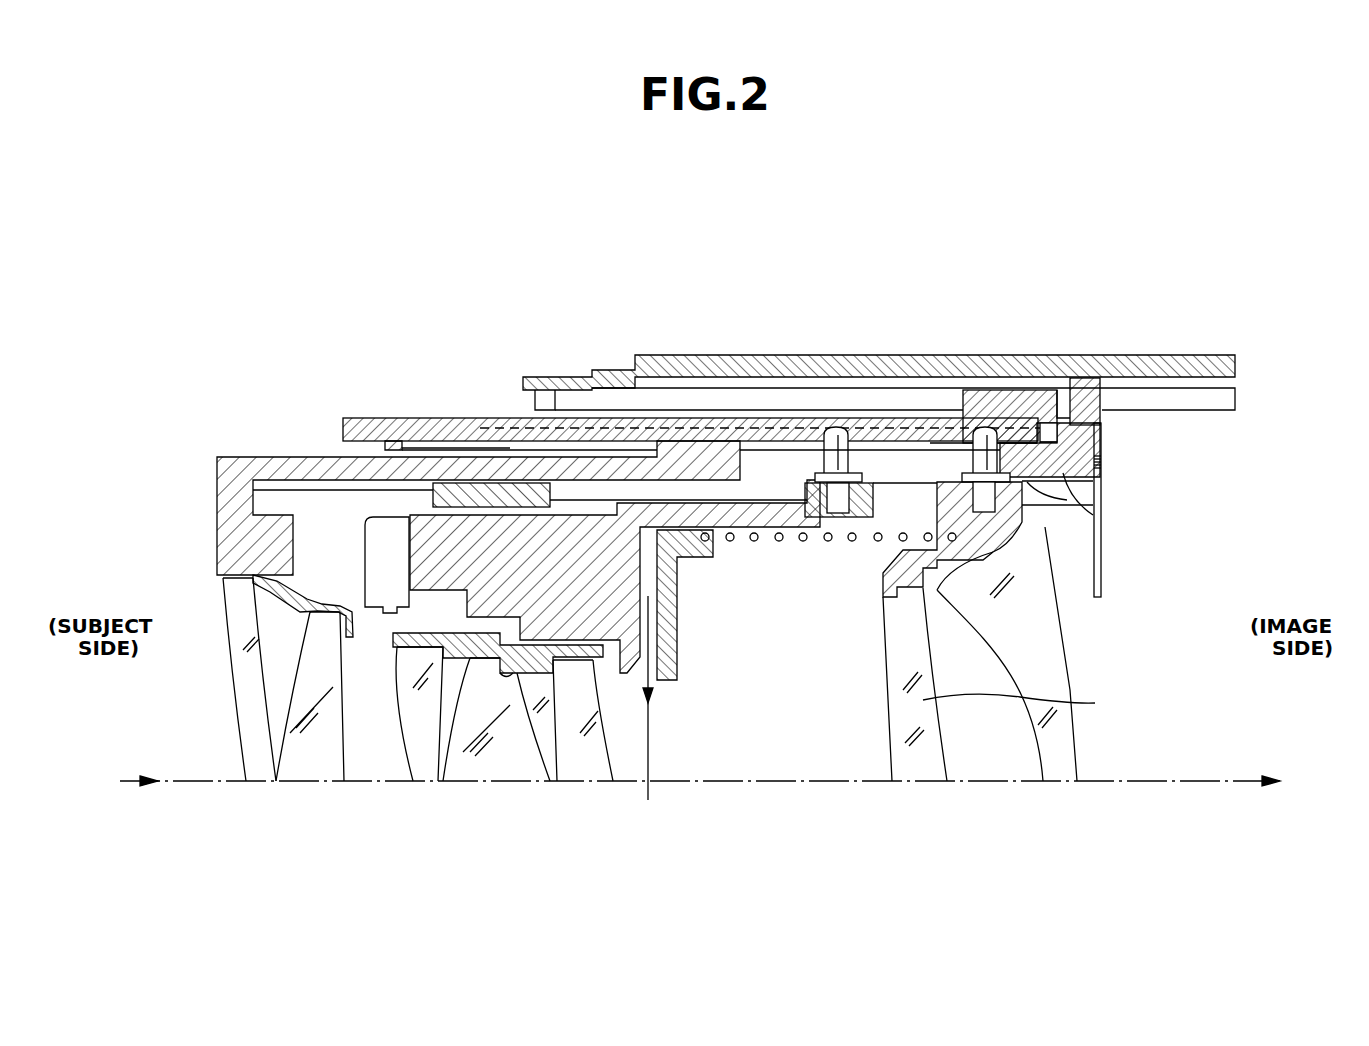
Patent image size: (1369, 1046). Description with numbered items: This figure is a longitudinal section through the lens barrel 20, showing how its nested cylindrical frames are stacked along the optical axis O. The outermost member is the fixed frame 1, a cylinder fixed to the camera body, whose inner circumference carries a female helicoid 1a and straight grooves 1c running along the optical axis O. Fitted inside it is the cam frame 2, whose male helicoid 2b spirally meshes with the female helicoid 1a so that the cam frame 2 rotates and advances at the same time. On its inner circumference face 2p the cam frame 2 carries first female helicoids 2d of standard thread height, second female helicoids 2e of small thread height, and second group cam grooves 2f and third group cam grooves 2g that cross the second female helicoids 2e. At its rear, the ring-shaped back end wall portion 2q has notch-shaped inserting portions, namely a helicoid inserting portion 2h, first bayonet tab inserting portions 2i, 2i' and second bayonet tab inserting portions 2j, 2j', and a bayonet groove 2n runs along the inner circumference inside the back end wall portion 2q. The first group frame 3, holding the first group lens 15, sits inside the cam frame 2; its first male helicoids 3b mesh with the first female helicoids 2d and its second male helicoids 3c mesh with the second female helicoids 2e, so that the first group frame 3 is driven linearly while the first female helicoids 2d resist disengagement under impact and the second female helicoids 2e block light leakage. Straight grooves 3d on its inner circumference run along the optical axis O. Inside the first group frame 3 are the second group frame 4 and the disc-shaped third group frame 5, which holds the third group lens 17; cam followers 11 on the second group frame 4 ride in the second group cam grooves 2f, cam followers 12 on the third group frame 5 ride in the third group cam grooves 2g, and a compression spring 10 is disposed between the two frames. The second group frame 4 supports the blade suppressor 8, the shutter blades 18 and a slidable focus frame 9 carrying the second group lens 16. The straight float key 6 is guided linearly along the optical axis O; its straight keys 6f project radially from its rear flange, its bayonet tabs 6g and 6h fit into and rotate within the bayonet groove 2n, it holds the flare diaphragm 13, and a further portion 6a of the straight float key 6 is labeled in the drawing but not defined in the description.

The optical axis O is at (180, 781).
The lens barrel 20 is at (243, 318).
The fixed frame 1 is at (1165, 362).
The female helicoid 1a is at (565, 375).
The straight grooves 1c is at (1210, 382).
The cam frame 2 is at (363, 418).
The male helicoid 2b is at (1030, 460).
The first female helicoids 2d is at (433, 495).
The second female helicoids 2e is at (479, 426).
The second group cam grooves 2f is at (862, 430).
The third group cam grooves 2g is at (963, 450).
The helicoid inserting portion 2h is at (1146, 466).
The bayonet tab inserting portion 2i is at (1117, 462).
The bayonet tab inserting portion 2j is at (1110, 464).
The bayonet tab inserting portion 2i' is at (1103, 465).
The bayonet tab inserting portion 2j' is at (1100, 467).
The bayonet groove 2n is at (1068, 325).
The inner circumference face 2p is at (1102, 540).
The back end wall portion 2q is at (1102, 432).
The first group frame 3 is at (232, 458).
The first male helicoids 3b is at (722, 422).
The second male helicoids 3c is at (760, 445).
The straight grooves 3d is at (290, 487).
The second group frame 4 is at (410, 549).
The third group frame 5 is at (993, 552).
The straight float key 6 is at (1094, 515).
The rotating ring portion 6a is at (422, 482).
The straight keys 6f is at (1087, 393).
The bayonet tabs 6g is at (1055, 375).
The bayonet tabs 6h is at (1045, 430).
The blade suppressor 8 is at (678, 634).
The focus frame 9 is at (388, 638).
The compression spring 10 is at (828, 545).
The cam follower 11 is at (815, 428).
The cam follower 12 is at (955, 458).
The flare diaphragm 13 is at (1103, 597).
The first group lens 15 is at (260, 757).
The second group lens 16 is at (423, 757).
The third group lens 17 is at (1060, 758).
The shutter blades 18 is at (648, 750).